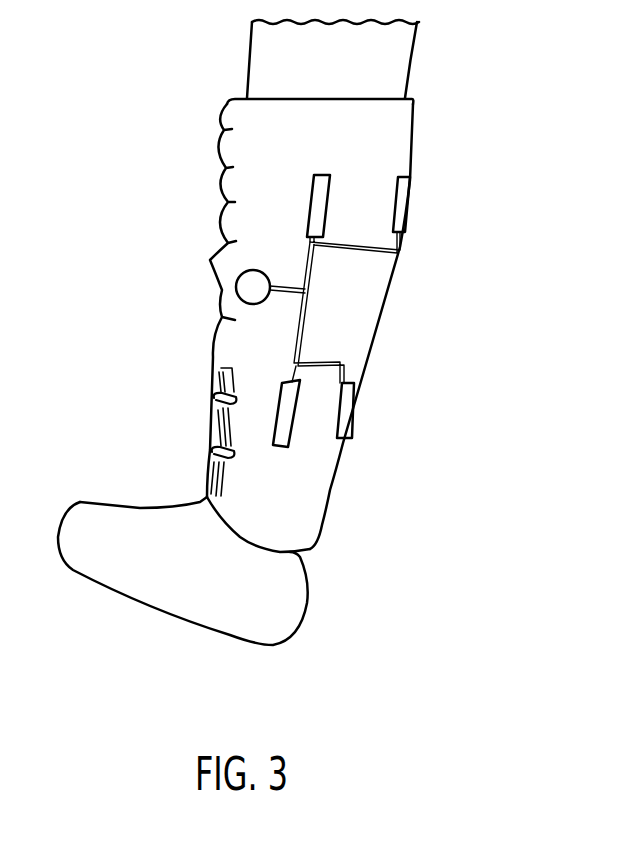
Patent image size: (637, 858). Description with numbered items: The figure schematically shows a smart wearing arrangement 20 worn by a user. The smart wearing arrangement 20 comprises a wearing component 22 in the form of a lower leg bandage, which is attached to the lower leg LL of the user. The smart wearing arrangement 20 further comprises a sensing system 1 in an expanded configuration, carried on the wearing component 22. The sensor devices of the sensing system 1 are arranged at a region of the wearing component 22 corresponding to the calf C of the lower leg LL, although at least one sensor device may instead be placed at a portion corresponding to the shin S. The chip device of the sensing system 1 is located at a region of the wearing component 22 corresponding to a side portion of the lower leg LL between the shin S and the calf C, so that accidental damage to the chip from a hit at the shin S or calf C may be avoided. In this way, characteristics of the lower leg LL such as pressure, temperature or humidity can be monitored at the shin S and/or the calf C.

The lower leg LL is at (405, 68).
The smart wearing arrangement 20 is at (203, 149).
The wearing component 22 is at (212, 258).
The shin S is at (203, 410).
The sensing system 1 is at (370, 422).
The calf C is at (332, 523).